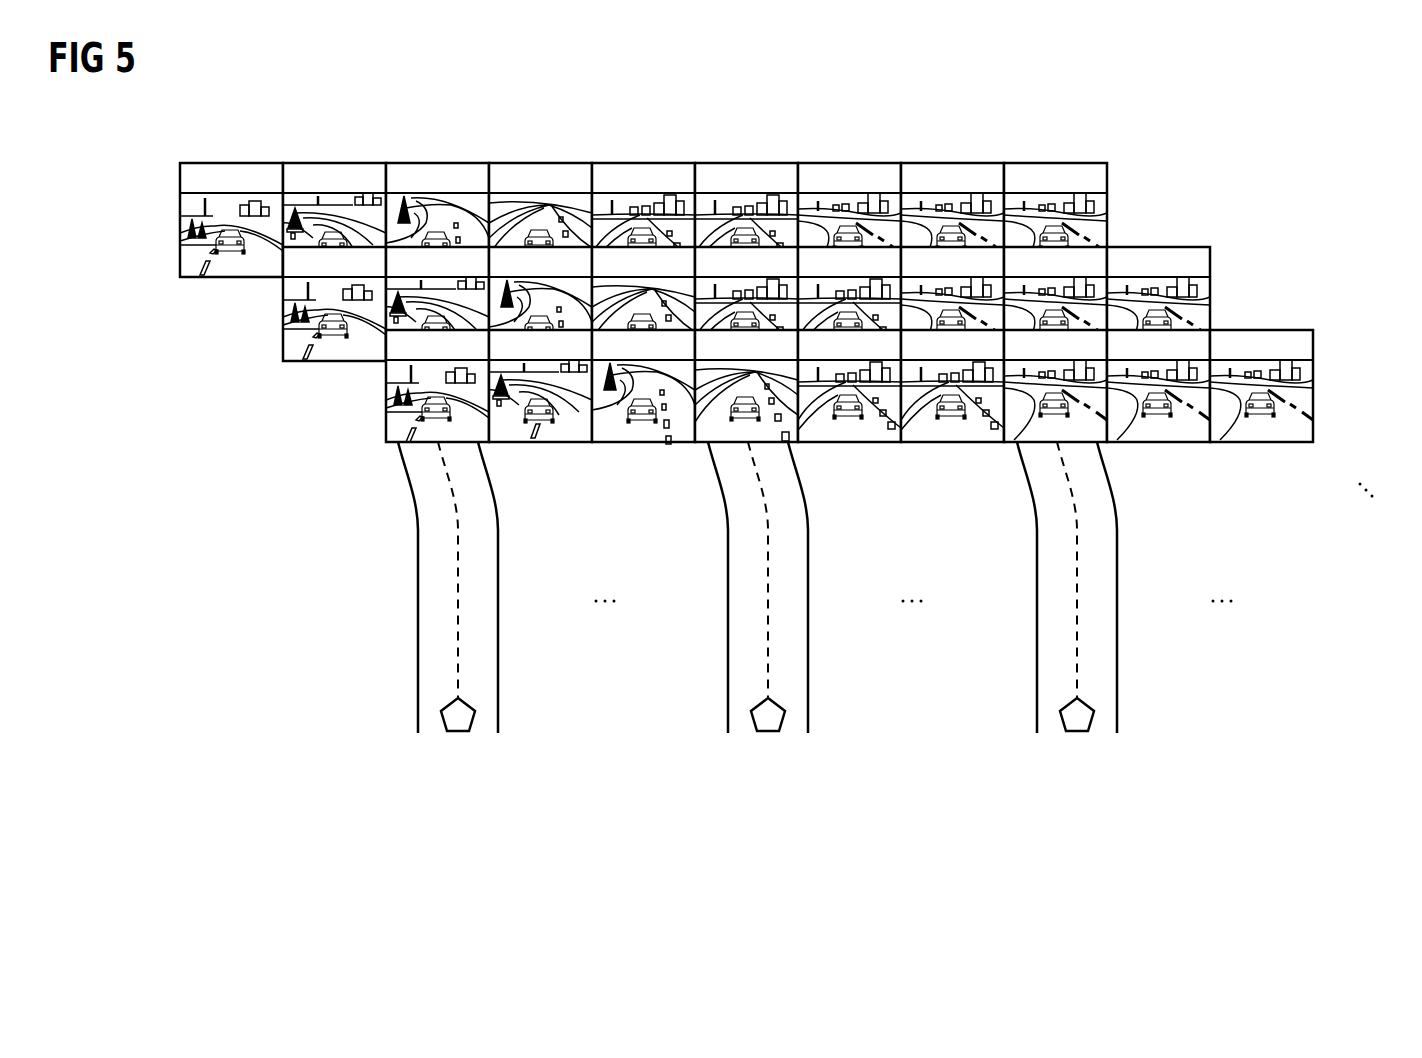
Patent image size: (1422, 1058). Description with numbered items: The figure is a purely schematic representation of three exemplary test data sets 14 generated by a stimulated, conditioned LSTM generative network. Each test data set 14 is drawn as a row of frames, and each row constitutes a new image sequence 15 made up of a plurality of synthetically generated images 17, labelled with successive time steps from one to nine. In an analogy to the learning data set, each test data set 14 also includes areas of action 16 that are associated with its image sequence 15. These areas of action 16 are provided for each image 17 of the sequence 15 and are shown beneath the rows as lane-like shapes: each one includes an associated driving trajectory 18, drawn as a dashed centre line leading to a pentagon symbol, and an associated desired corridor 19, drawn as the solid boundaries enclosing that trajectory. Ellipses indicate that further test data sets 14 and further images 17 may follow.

The test data set 14 is at (774, 383).
The image sequence 15 is at (800, 317).
The areas of action 16 is at (458, 760).
The synthetically generated image 17 is at (1278, 432).
The driving trajectory 18 is at (532, 640).
The desired corridor 19 is at (545, 693).